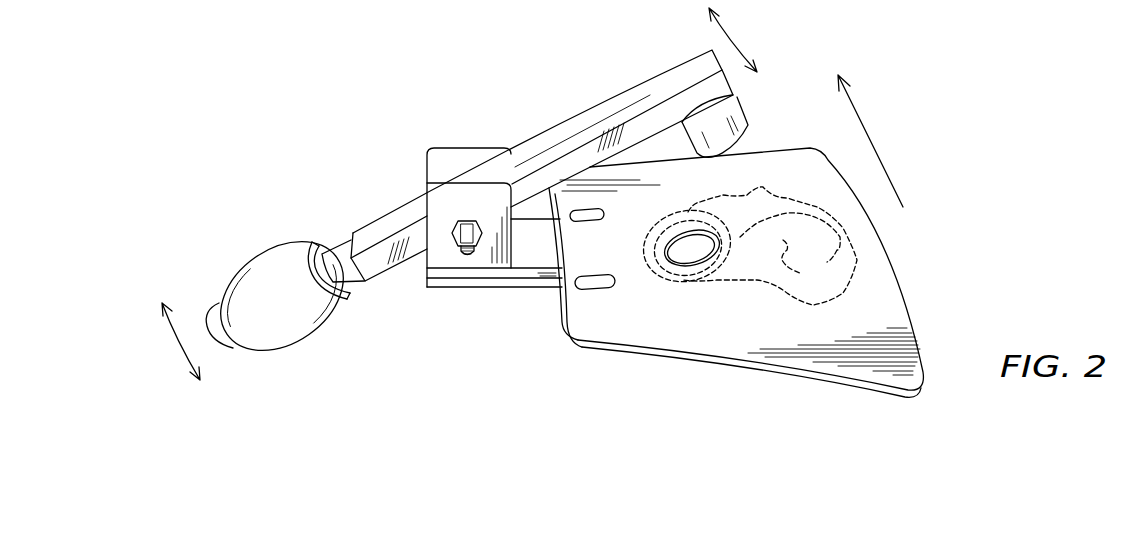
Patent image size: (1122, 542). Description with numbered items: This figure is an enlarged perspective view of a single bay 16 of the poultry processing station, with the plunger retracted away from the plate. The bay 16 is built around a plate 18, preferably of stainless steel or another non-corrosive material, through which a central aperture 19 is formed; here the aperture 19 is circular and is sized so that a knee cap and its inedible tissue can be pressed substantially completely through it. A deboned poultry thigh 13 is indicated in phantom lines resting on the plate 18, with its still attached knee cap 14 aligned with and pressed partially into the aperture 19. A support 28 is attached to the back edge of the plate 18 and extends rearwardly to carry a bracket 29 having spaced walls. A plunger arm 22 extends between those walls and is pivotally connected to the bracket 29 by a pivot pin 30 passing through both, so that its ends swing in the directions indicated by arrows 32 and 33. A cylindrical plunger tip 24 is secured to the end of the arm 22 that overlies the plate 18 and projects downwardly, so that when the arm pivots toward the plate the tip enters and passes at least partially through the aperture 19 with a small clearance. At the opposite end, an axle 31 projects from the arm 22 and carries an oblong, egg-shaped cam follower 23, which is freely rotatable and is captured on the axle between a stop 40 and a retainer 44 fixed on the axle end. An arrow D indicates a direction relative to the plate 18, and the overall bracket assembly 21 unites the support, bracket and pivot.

The deboned poultry thigh 13 is at (752, 282).
The knee cap 14 is at (692, 210).
The bay 16 is at (339, 81).
The plate 18 is at (880, 300).
The aperture 19 is at (681, 265).
The bracket assembly 21 is at (488, 116).
The plunger arm 22 is at (613, 100).
The cam follower 23 is at (247, 263).
The plunger tip 24 is at (742, 115).
The support 28 is at (538, 250).
The bracket 29 is at (452, 190).
The pivot pin 30 is at (462, 256).
The axle 31 is at (341, 244).
The arrow 32 is at (735, 33).
The arrow 33 is at (173, 340).
The stop 40 is at (348, 293).
The retainer 44 is at (230, 347).
The direction arrow D is at (870, 141).